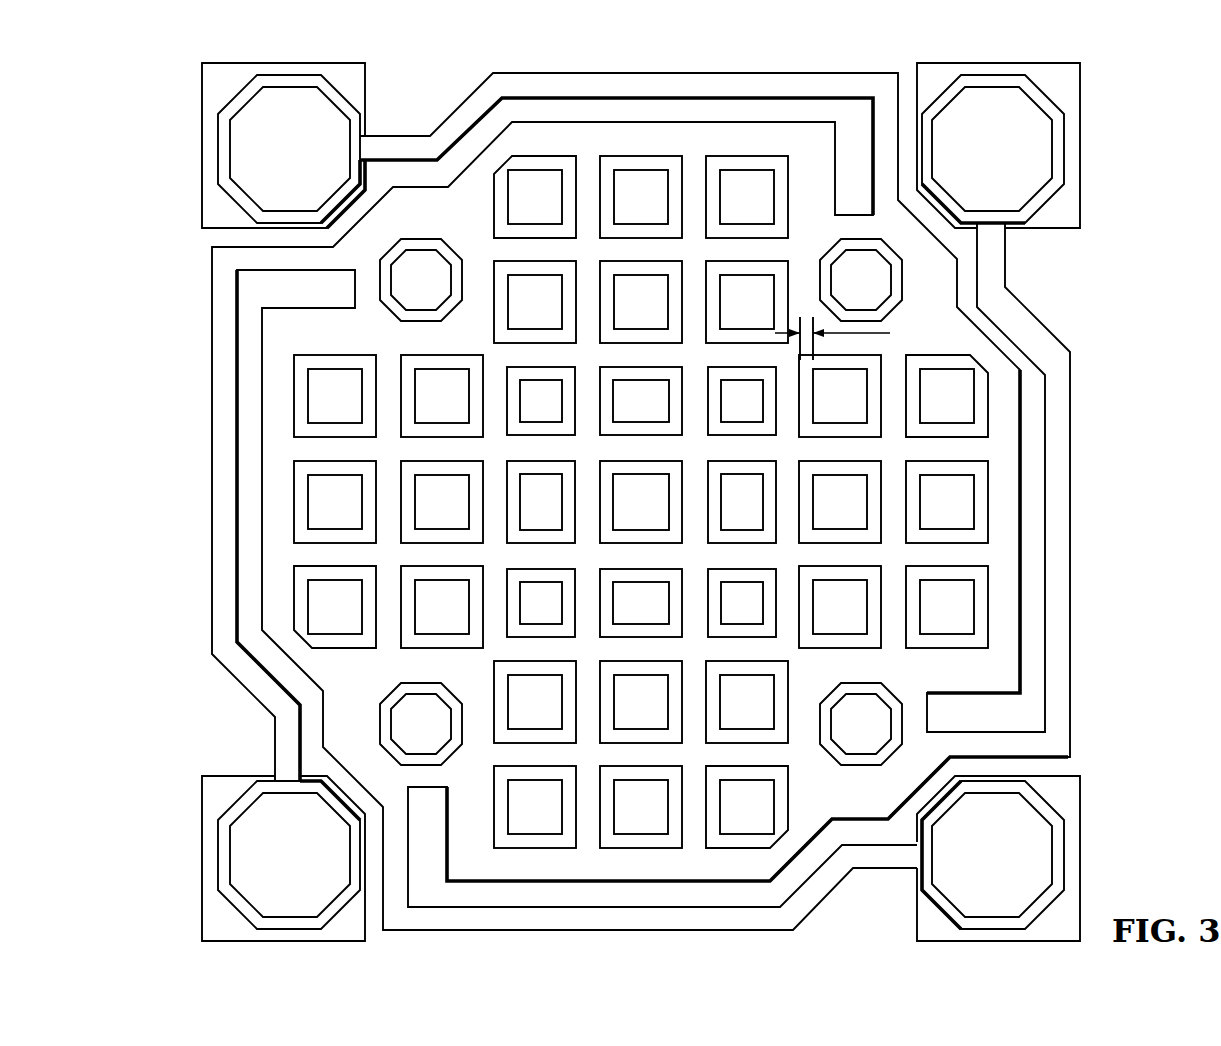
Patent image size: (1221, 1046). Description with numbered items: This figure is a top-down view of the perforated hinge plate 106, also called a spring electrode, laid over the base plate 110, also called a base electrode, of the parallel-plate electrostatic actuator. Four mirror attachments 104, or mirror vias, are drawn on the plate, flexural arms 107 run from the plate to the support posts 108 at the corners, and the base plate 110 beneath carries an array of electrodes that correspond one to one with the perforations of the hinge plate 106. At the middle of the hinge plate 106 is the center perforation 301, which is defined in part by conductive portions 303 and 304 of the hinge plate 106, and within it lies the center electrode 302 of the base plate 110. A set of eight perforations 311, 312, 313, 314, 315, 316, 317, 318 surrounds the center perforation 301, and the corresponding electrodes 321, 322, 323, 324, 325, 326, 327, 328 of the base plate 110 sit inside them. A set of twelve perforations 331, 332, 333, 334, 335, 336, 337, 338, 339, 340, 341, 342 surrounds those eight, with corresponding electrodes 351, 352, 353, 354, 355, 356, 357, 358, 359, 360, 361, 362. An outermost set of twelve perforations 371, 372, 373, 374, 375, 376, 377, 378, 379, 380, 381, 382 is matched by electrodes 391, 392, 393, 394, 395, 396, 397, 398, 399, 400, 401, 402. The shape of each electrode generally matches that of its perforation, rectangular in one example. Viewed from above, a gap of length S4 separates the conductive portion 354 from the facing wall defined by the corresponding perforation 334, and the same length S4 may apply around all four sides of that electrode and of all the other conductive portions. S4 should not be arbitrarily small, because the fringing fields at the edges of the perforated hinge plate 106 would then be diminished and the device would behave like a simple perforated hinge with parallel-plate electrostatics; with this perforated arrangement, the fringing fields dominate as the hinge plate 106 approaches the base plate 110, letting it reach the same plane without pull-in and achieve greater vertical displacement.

The mirror attachments 104 is at (380, 282).
The hinge plate 106 is at (428, 182).
The flexural arms 107 is at (627, 73).
The support posts 108 is at (210, 147).
The base plate 110 is at (497, 202).
The center perforation 301 is at (765, 750).
The center electrode 302 is at (662, 517).
The conductive portion 303 is at (505, 478).
The conductive portion 304 is at (696, 440).
The perforation 311 is at (525, 398).
The perforation 312 is at (605, 375).
The perforation 313 is at (742, 415).
The perforation 314 is at (768, 500).
The perforation 315 is at (760, 630).
The perforation 316 is at (605, 637).
The perforation 317 is at (520, 632).
The perforation 318 is at (512, 512).
The electrode 321 is at (583, 440).
The electrode 322 is at (662, 416).
The electrode 323 is at (767, 413).
The electrode 324 is at (742, 523).
The electrode 325 is at (742, 613).
The electrode 326 is at (662, 618).
The electrode 327 is at (538, 617).
The electrode 328 is at (540, 522).
The perforation 331 is at (500, 280).
The perforation 332 is at (667, 272).
The perforation 333 is at (778, 272).
The perforation 334 is at (878, 366).
The perforation 335 is at (870, 528).
The perforation 336 is at (865, 642).
The perforation 337 is at (783, 718).
The perforation 338 is at (668, 743).
The perforation 339 is at (498, 708).
The perforation 340 is at (412, 625).
The perforation 341 is at (410, 500).
The perforation 342 is at (410, 413).
The electrode 351 is at (556, 317).
The electrode 352 is at (662, 317).
The electrode 353 is at (768, 317).
The conductive portion 354 is at (861, 411).
The electrode 355 is at (861, 517).
The electrode 356 is at (861, 622).
The electrode 357 is at (768, 717).
The electrode 358 is at (662, 717).
The electrode 359 is at (556, 717).
The electrode 360 is at (463, 622).
The electrode 361 is at (463, 517).
The electrode 362 is at (463, 411).
The perforation 371 is at (533, 168).
The perforation 372 is at (637, 165).
The perforation 373 is at (780, 178).
The perforation 374 is at (978, 383).
The perforation 375 is at (978, 500).
The perforation 376 is at (978, 610).
The perforation 377 is at (808, 865).
The perforation 378 is at (637, 840).
The perforation 379 is at (502, 827).
The perforation 380 is at (305, 623).
The perforation 381 is at (305, 523).
The perforation 382 is at (305, 380).
The electrode 391 is at (556, 212).
The electrode 392 is at (662, 212).
The electrode 393 is at (768, 212).
The electrode 394 is at (968, 411).
The electrode 395 is at (968, 517).
The electrode 396 is at (968, 622).
The electrode 397 is at (768, 822).
The electrode 398 is at (662, 822).
The electrode 399 is at (556, 822).
The electrode 400 is at (356, 622).
The electrode 401 is at (356, 517).
The electrode 402 is at (356, 411).
The gap length S4 is at (848, 338).